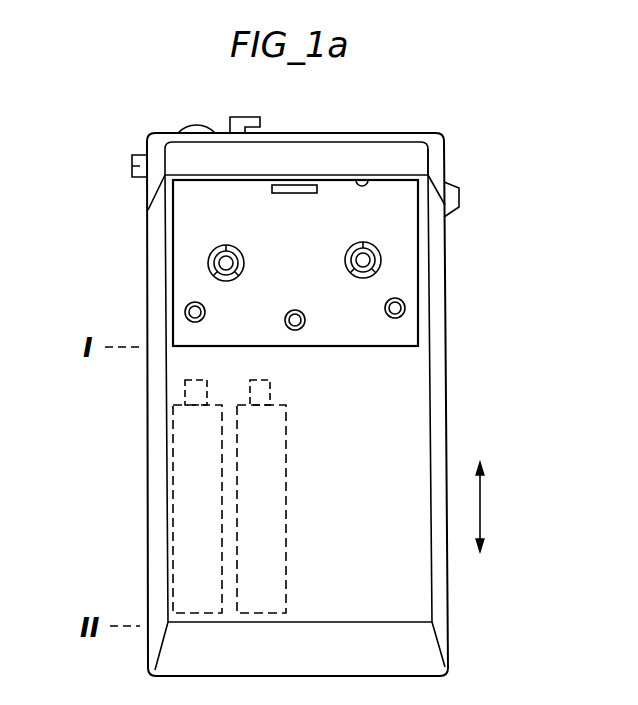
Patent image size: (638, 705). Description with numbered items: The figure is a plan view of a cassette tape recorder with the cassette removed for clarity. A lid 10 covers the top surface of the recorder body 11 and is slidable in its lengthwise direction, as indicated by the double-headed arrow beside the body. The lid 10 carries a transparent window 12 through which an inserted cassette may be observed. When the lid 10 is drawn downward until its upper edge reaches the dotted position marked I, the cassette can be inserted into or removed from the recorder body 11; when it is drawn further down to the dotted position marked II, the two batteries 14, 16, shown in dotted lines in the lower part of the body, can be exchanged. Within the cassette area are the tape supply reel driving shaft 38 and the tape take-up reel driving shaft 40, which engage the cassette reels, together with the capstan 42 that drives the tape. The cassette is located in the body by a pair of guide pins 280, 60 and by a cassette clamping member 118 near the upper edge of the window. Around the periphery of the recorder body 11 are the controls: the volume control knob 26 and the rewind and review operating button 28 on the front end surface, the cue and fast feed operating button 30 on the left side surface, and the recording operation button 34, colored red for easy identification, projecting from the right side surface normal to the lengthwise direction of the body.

The lid 10 is at (443, 613).
The recorder body 11 is at (438, 160).
The transparent window 12 is at (362, 178).
The battery 14 is at (175, 513).
The battery 16 is at (287, 508).
The volume control knob 26 is at (199, 125).
The rewind and review operating button 28 is at (247, 117).
The cue and fast feed operating button 30 is at (132, 165).
The recording operation button 34 is at (456, 202).
The tape supply reel driving shaft 38 is at (381, 260).
The tape take-up reel driving shaft 40 is at (208, 261).
The capstan 42 is at (300, 331).
The guide pin 60 is at (405, 308).
The cassette clamping member 118 is at (294, 185).
The guide pin 280 is at (187, 316).